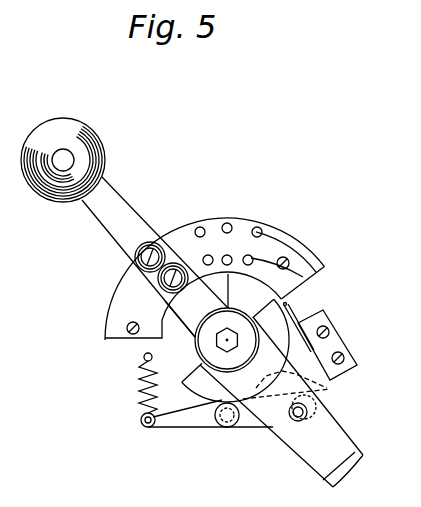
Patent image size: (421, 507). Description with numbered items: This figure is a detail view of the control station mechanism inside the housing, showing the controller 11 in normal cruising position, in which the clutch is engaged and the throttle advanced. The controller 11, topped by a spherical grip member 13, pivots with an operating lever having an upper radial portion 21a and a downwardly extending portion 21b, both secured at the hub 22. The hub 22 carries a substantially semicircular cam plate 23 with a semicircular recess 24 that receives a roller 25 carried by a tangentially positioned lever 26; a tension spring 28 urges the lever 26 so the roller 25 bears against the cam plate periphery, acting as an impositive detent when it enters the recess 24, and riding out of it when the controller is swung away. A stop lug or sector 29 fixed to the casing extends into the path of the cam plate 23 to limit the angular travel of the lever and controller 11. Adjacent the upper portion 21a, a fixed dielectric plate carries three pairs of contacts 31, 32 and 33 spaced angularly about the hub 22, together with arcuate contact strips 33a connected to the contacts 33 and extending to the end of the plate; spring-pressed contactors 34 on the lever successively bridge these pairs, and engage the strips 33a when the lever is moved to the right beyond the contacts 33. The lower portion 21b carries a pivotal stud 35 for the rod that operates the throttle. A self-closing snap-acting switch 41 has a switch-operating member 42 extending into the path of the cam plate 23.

The controller 11 is at (105, 223).
The spherical grip member 13 is at (96, 153).
The upper radial portion of operating lever 21a is at (192, 315).
The downwardly extending portion of operating lever 21b is at (347, 445).
The hub 22 is at (216, 343).
The cam plate 23 is at (200, 380).
The semicircular recess 24 is at (257, 380).
The roller 25 is at (228, 424).
The lever 26 is at (197, 420).
The tension spring 28 is at (140, 387).
The stop lug or sector 29 is at (228, 296).
The pair of contacts 31 is at (206, 256).
The pair of contacts 32 is at (225, 258).
The pair of contacts 33 is at (250, 258).
The arcuate contact strips 33a is at (283, 283).
The spring-pressed contactors 34 is at (164, 278).
The pivotal stud 35 is at (290, 425).
The self-closing switch 41 is at (333, 343).
The switch-operating member 42 is at (289, 312).